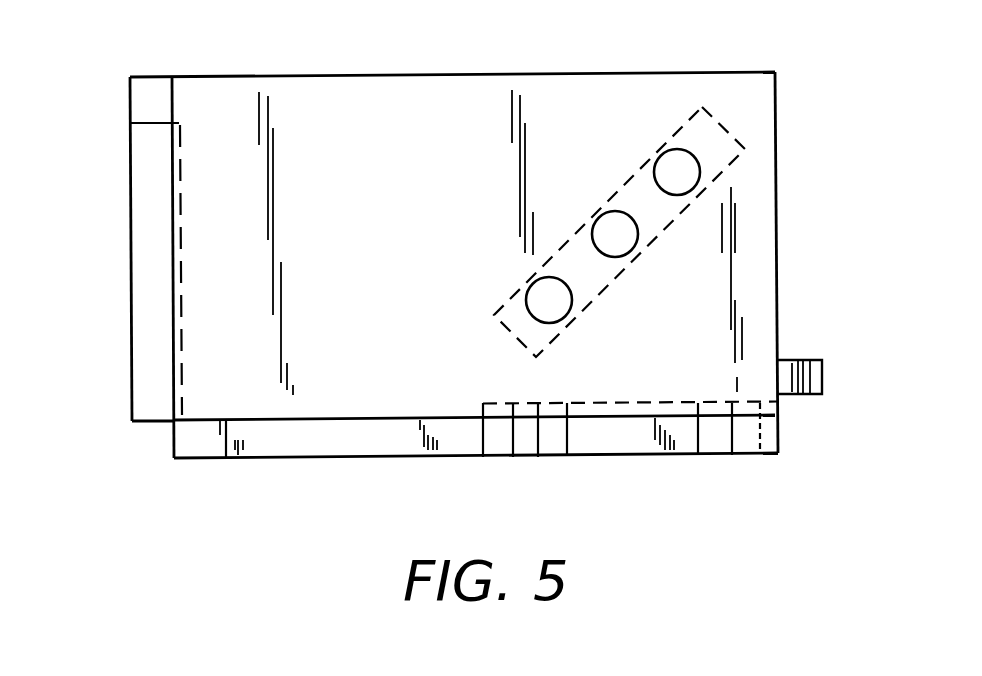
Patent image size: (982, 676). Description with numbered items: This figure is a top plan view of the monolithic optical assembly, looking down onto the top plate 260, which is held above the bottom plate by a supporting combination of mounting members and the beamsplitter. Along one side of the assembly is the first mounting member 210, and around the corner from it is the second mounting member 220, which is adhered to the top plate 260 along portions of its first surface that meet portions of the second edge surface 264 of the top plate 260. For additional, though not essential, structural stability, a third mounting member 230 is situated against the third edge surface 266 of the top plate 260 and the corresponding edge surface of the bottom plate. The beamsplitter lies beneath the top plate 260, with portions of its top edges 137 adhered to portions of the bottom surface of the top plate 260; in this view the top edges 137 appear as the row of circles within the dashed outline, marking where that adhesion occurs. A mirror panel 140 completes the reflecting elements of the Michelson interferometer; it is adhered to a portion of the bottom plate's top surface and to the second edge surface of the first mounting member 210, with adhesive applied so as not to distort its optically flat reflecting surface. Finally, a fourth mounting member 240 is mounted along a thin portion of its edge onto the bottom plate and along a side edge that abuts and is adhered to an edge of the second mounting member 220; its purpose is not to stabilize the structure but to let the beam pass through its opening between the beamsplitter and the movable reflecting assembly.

The top edges 137 is at (608, 225).
The mirror panel 140 is at (113, 249).
The first mounting member 210 is at (414, 54).
The second mounting member 220 is at (467, 470).
The third mounting member 230 is at (851, 351).
The fourth mounting member 240 is at (516, 468).
The top plate 260 is at (457, 242).
The second edge surface 264 is at (630, 457).
The third edge surface 266 is at (835, 262).